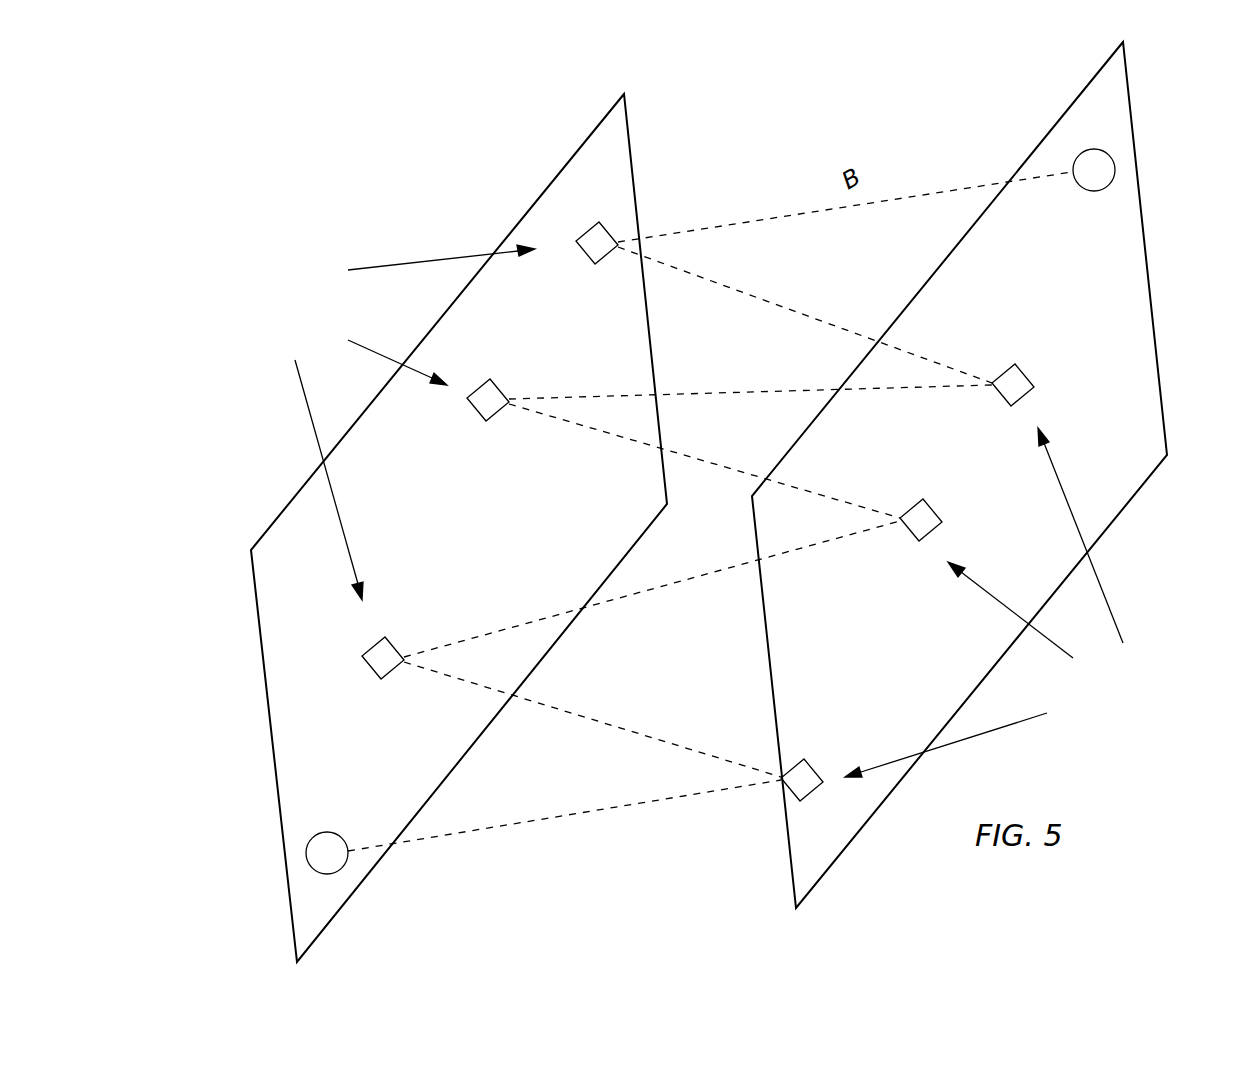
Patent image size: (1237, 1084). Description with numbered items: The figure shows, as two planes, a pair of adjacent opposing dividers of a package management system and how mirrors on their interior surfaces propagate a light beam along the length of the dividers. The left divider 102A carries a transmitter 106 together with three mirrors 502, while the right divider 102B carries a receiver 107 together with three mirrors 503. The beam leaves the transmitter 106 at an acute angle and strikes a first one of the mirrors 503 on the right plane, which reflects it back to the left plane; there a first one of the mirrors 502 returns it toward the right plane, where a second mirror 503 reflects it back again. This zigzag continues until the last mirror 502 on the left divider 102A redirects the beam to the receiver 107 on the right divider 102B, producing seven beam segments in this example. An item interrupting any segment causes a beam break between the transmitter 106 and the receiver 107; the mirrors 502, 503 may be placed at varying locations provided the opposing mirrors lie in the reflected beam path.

The left divider 102A is at (250, 597).
The right divider 102B is at (1170, 424).
The transmitter 106 is at (337, 864).
The receiver 107 is at (1107, 165).
The mirrors 502 is at (398, 302).
The mirrors 503 is at (1025, 602).